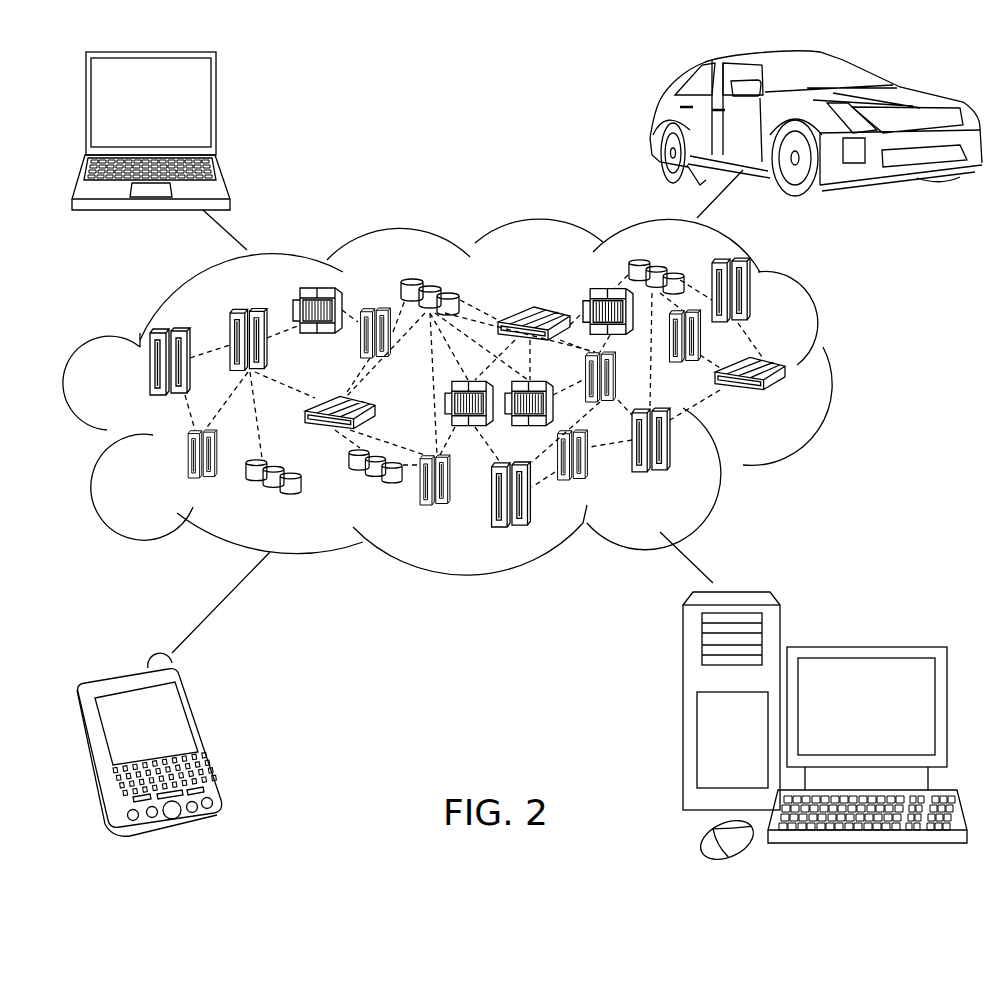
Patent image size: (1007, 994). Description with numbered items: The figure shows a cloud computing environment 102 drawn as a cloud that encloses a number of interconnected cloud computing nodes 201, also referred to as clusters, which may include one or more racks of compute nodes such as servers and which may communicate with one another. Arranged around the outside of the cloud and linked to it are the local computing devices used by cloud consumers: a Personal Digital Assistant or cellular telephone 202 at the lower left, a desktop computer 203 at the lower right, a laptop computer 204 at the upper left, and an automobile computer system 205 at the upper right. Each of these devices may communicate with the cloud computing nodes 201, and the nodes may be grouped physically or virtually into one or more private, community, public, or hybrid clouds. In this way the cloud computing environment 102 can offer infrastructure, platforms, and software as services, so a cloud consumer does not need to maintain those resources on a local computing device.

The cloud computing environment 102 is at (847, 370).
The cloud computing nodes 201 is at (371, 272).
The Personal Digital Assistant (PDA) or cellular telephone 202 is at (210, 738).
The desktop computer 203 is at (863, 647).
The laptop computer 204 is at (216, 111).
The automobile computer system 205 is at (653, 126).